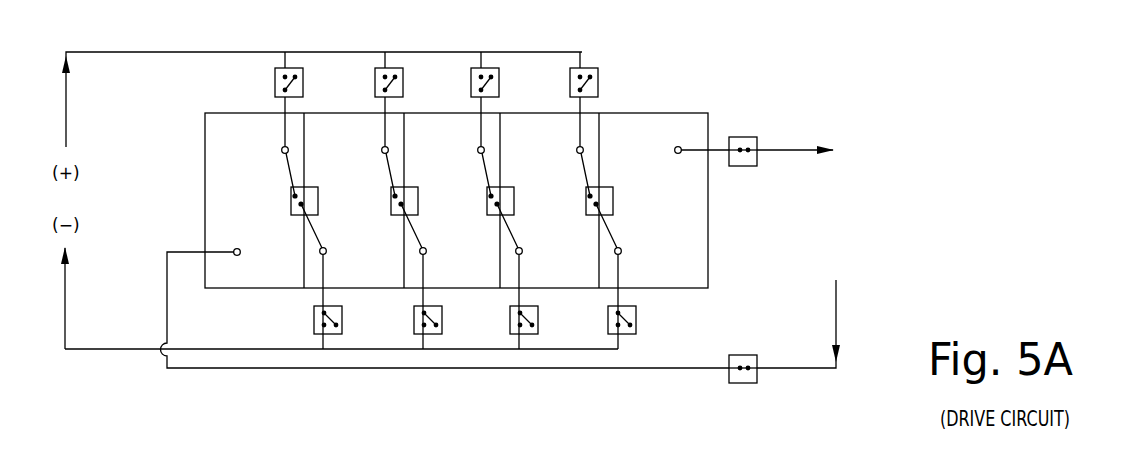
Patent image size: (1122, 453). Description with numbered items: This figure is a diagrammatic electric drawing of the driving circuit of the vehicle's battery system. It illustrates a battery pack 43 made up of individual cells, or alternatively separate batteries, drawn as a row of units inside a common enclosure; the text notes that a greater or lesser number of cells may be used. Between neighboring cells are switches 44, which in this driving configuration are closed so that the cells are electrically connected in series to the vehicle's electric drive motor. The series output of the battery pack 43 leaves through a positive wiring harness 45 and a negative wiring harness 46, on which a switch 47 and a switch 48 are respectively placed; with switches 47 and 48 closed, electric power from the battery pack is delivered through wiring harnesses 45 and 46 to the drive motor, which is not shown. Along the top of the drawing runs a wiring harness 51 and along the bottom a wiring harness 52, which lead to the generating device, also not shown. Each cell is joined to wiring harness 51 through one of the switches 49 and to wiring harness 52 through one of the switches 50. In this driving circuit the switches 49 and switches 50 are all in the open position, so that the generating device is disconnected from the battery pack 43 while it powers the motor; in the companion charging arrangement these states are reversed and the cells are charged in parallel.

The battery pack 43 is at (222, 130).
The switches 44 is at (291, 197).
The wiring harness 45 is at (797, 148).
The wiring harness 46 is at (197, 368).
The switch 47 is at (738, 167).
The switch 48 is at (738, 355).
The switches 49 is at (275, 73).
The switches 50 is at (314, 318).
The wiring harness 51 is at (181, 52).
The wiring harness 52 is at (124, 349).